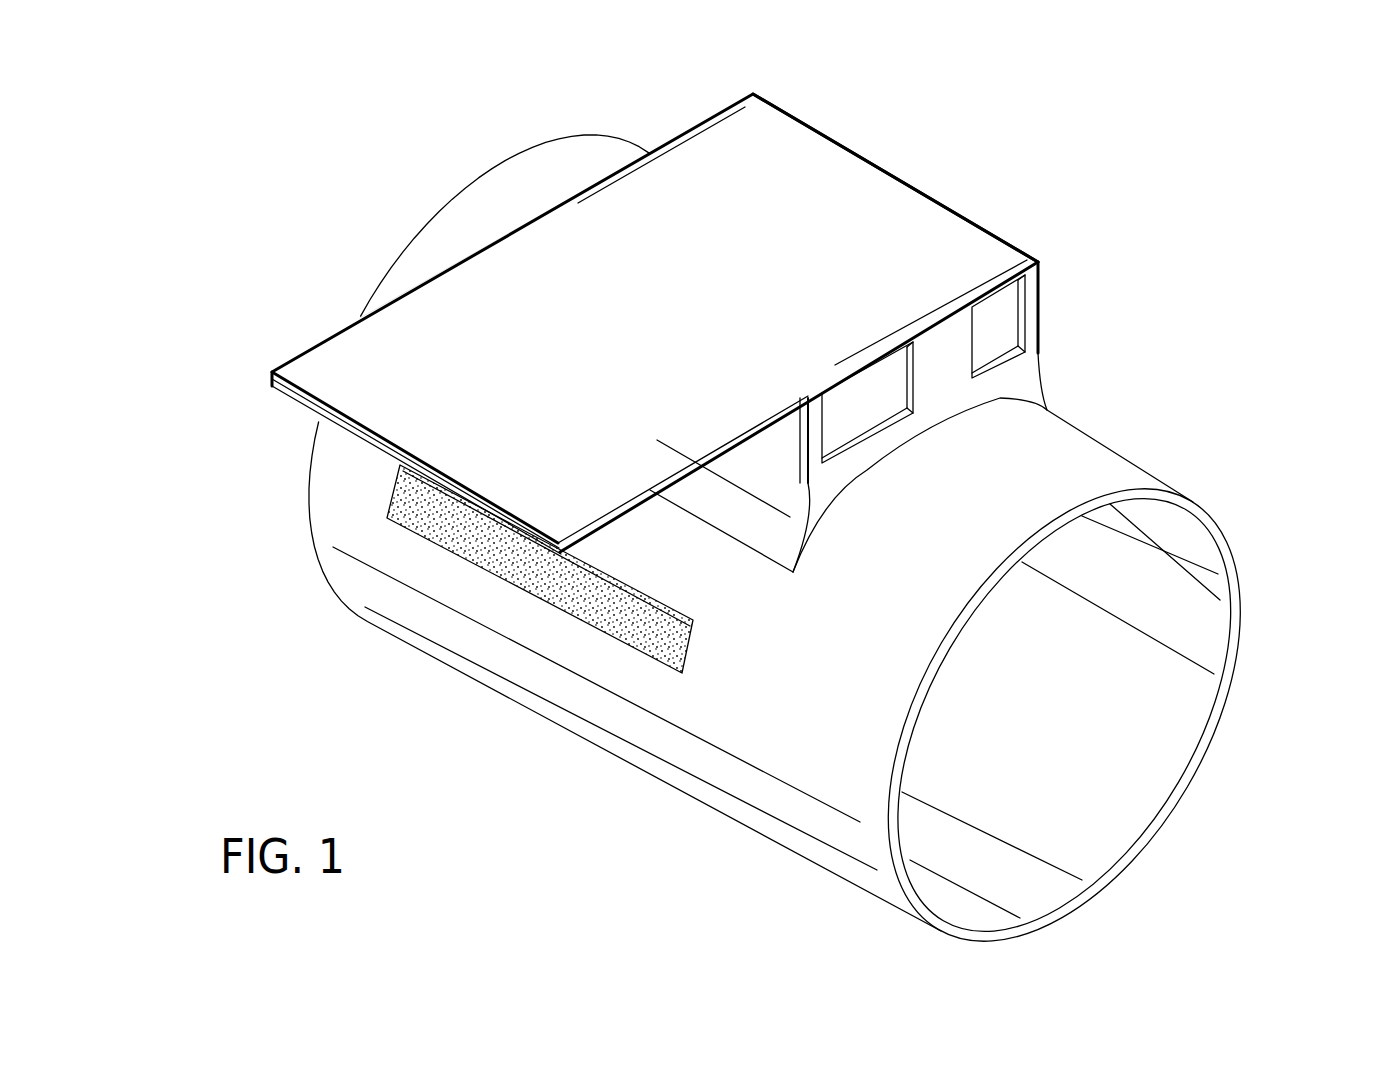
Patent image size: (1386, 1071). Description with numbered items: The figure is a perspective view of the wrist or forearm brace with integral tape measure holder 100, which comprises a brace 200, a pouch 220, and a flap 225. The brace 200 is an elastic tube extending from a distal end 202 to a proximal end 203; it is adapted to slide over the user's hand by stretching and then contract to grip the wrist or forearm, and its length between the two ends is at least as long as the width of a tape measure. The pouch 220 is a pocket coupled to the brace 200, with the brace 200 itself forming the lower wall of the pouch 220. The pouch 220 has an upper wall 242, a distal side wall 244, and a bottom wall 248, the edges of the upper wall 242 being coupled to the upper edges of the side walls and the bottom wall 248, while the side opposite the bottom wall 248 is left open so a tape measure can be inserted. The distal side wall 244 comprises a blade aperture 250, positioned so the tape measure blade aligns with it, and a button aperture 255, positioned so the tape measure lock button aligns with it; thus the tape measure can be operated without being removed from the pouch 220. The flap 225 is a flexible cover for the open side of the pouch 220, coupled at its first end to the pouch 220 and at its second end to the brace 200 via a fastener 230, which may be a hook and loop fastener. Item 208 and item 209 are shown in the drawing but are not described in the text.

The wrist or forearm brace with integral tape measure holder 100 is at (240, 156).
The brace 200 is at (834, 568).
The distal end 202 is at (1236, 656).
The conduit interior 208 is at (1132, 702).
The proximal end 203 is at (372, 295).
The insertion direction arrow 209 is at (780, 454).
The pouch 220 is at (1006, 367).
The flap 225 is at (430, 330).
The fastener 230 is at (310, 409).
The upper wall 242 is at (675, 170).
The distal side wall 244 is at (940, 372).
The bottom wall 248 is at (835, 140).
The blade aperture 250 is at (1000, 357).
The button aperture 255 is at (840, 452).